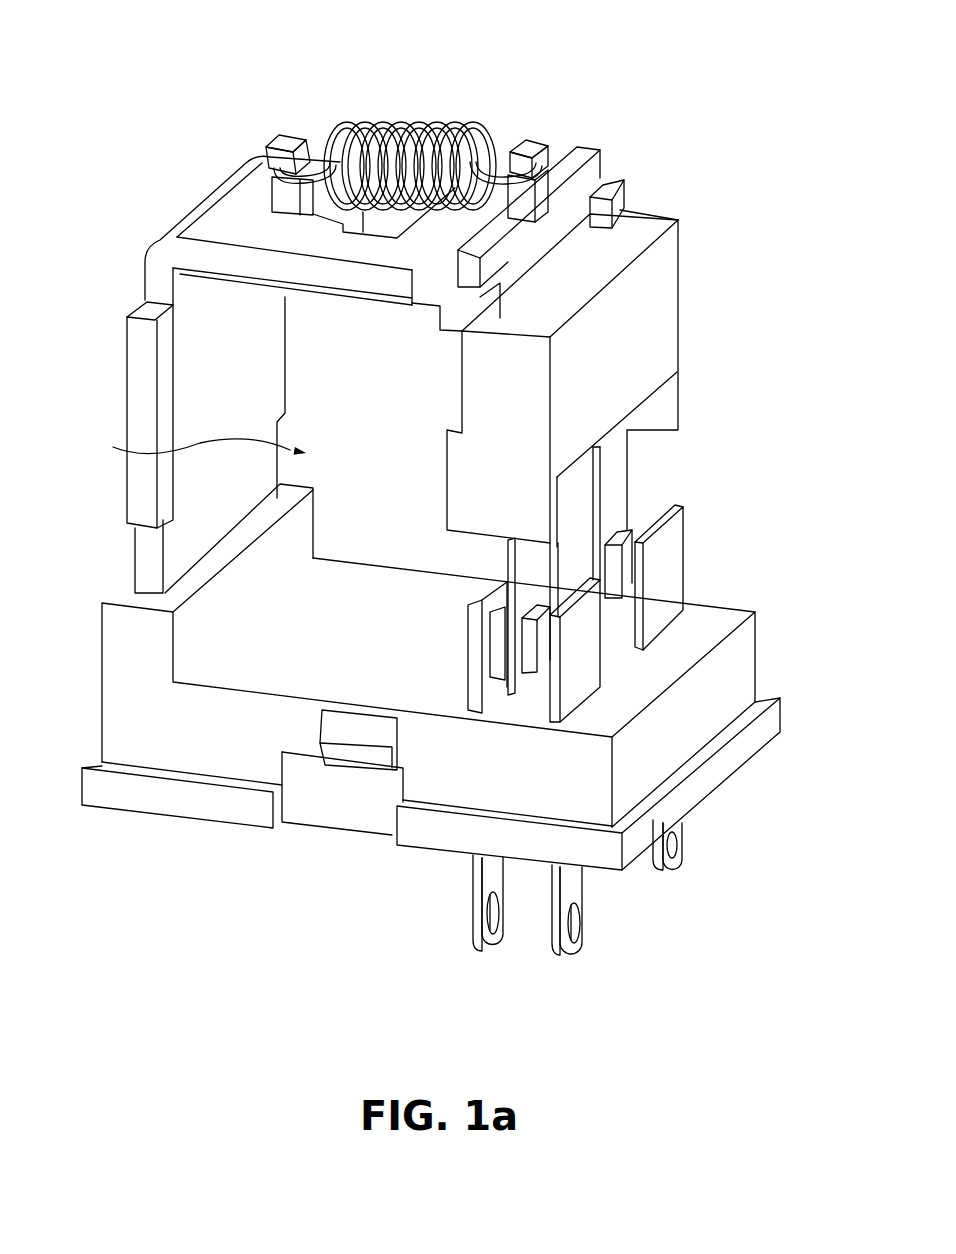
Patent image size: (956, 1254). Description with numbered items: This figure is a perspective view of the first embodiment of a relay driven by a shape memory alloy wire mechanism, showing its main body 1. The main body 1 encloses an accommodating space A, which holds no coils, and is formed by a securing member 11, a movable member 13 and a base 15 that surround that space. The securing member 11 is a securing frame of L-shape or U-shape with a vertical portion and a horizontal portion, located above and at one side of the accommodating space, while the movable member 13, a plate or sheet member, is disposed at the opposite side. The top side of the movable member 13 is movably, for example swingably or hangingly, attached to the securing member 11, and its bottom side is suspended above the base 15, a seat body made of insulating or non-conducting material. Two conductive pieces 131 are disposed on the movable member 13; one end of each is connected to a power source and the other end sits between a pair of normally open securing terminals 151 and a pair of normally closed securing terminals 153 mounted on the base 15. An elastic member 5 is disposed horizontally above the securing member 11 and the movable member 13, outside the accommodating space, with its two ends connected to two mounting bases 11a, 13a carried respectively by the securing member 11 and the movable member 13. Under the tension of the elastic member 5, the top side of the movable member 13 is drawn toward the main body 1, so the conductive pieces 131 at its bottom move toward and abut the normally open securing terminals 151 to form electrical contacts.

The main body 1 is at (200, 180).
The securing member 11 is at (150, 244).
The mounting base 11a is at (288, 136).
The elastic member 5 is at (418, 124).
The mounting base 13a is at (533, 142).
The movable member 13 is at (650, 301).
The conductive piece 131 is at (612, 470).
The base 15 is at (735, 660).
The normally open securing terminal 151 is at (585, 950).
The normally closed securing terminal 153 is at (472, 946).